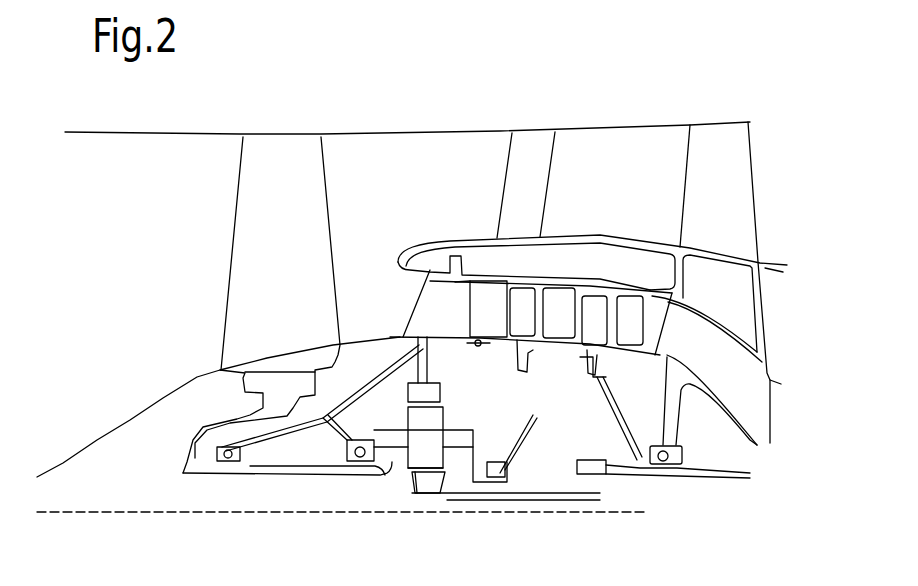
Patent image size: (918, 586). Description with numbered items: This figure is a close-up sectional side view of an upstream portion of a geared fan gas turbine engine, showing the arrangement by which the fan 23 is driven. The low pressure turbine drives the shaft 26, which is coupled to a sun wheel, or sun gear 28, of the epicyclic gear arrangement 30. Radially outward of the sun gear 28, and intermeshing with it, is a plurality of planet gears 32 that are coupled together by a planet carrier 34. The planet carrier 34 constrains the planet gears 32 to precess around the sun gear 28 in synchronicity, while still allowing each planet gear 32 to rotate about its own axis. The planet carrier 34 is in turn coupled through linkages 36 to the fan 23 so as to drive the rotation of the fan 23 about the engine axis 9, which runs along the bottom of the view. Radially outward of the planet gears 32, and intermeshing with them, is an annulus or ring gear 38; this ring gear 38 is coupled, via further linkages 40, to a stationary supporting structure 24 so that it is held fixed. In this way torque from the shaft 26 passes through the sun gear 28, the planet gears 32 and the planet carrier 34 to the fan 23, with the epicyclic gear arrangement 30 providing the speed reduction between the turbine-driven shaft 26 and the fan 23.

The engine axis 9 is at (190, 513).
The fan 23 is at (253, 287).
The stationary supporting structure 24 is at (435, 305).
The shaft 26 is at (650, 477).
The sun gear 28 is at (425, 487).
The epicyclic gear arrangement 30 is at (405, 455).
The planet gears 32 is at (405, 470).
The planet carrier 34 is at (467, 477).
The linkages 36 is at (375, 474).
The ring gear 38 is at (407, 395).
The linkages 40 is at (430, 362).